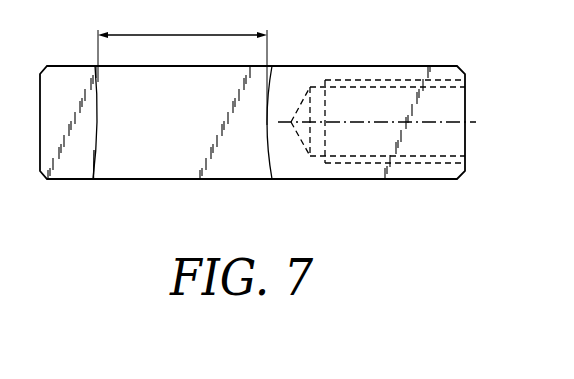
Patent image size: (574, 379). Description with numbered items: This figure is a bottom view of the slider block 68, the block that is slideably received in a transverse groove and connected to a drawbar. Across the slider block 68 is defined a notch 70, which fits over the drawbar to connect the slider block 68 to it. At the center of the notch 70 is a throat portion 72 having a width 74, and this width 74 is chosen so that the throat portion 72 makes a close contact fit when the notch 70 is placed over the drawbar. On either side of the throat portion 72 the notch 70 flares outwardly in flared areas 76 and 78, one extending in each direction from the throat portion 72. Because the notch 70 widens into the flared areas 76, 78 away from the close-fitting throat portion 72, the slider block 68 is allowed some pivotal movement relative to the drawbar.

The slider block 68 is at (289, 62).
The notch 70 is at (188, 160).
The throat portion 72 is at (97, 118).
The width 74 is at (170, 35).
The flared area 76 is at (95, 80).
The flared area 78 is at (94, 161).